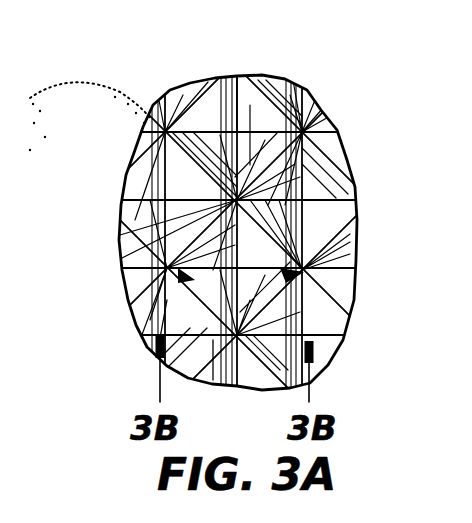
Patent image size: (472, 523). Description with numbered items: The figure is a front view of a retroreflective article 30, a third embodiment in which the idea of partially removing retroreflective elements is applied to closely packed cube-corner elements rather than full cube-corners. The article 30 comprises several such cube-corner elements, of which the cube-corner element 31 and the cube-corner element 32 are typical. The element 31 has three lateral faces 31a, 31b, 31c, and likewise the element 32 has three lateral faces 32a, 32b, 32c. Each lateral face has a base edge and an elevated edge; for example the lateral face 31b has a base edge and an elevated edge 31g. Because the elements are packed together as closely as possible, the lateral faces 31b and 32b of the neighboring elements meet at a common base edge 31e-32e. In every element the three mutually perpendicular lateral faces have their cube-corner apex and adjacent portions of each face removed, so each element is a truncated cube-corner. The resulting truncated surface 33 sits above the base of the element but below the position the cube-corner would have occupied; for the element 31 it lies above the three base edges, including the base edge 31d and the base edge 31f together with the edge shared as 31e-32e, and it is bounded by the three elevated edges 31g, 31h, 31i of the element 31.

The retroreflective article 30 is at (306, 75).
The cube-corner element 31 is at (200, 297).
The lateral face 31a is at (150, 322).
The lateral face 31b is at (165, 132).
The lateral face 31c is at (222, 288).
The base edge 31d is at (213, 378).
The common base edge 31e-32e is at (234, 77).
The base edge 31f is at (89, 116).
The elevated edge 31g is at (163, 335).
The elevated edge 31h is at (135, 195).
The elevated edge 31i is at (205, 228).
The cube-corner element 32 is at (318, 248).
The lateral face 32a is at (345, 309).
The lateral face 32b is at (342, 184).
The lateral face 32c is at (350, 220).
The truncated surface 33 is at (262, 278).